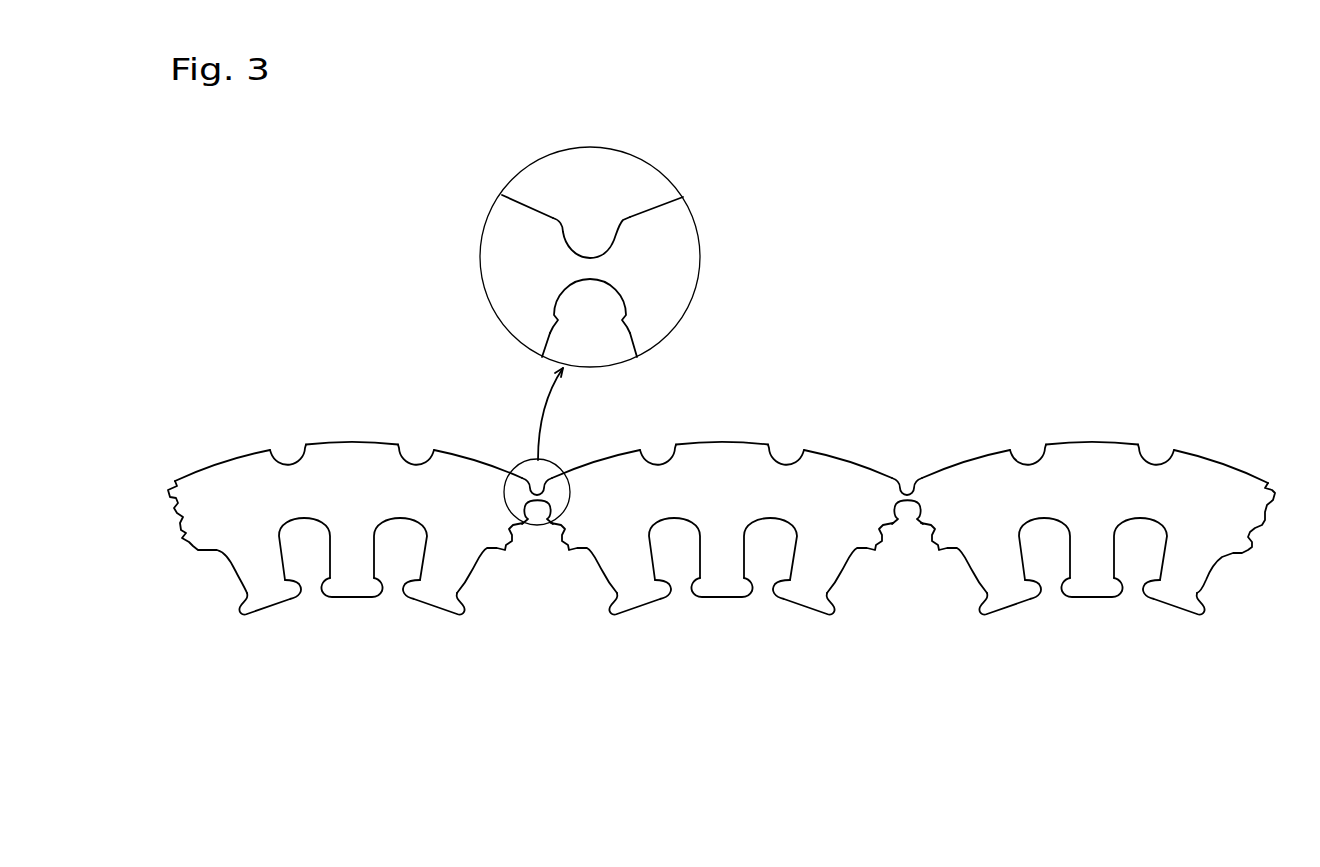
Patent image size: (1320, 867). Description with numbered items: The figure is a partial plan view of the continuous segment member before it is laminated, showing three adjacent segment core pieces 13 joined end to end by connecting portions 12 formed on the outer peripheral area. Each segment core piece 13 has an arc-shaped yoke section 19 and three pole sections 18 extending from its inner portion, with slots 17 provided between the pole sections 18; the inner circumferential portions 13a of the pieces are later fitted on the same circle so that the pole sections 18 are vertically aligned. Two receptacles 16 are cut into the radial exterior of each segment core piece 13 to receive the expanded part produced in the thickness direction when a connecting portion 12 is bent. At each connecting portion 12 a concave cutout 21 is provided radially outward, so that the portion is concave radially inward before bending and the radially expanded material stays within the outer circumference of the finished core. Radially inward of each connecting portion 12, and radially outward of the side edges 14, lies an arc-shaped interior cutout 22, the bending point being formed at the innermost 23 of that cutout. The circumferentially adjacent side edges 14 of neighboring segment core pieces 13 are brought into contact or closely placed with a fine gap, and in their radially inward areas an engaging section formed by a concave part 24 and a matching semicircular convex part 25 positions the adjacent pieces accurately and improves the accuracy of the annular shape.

The connecting portion 12 is at (592, 263).
The segment core piece 13 is at (235, 482).
The inner circumferential portion 13a is at (736, 600).
The side edge 14 is at (549, 530).
The receptacle 16 is at (288, 462).
The slot 17 is at (310, 577).
The pole section 18 is at (267, 590).
The yoke section 19 is at (357, 465).
The concave cutout 21 is at (585, 240).
The interior cutout 22 is at (593, 286).
The innermost of the interior cutout 23 is at (613, 275).
The concave part 24 is at (525, 528).
The convex part 25 is at (553, 528).